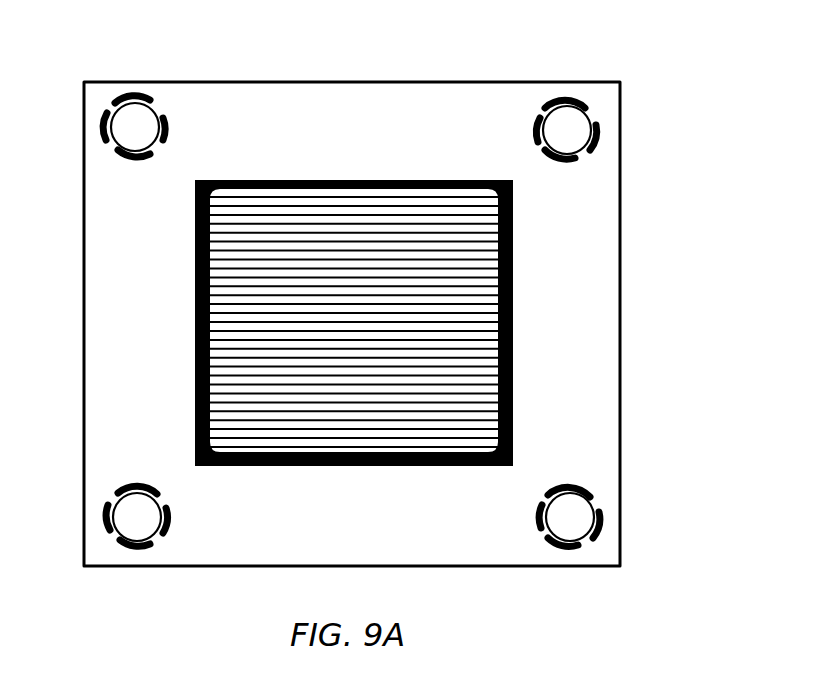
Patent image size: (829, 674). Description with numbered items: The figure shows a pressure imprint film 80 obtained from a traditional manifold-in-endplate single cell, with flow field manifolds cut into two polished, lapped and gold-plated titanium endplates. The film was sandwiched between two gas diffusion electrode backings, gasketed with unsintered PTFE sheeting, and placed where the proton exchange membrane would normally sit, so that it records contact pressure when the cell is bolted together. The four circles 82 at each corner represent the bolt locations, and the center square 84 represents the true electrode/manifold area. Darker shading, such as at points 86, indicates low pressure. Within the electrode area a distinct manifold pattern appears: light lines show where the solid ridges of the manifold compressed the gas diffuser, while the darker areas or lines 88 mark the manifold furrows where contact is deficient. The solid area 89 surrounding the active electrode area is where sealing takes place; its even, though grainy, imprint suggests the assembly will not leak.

The pressure imprint film 80 is at (366, 286).
The circles 82 is at (133, 130).
The center square 84 is at (380, 229).
The points 86 is at (197, 180).
The darker areas or lines 88 is at (467, 327).
The solid area 89 is at (582, 391).